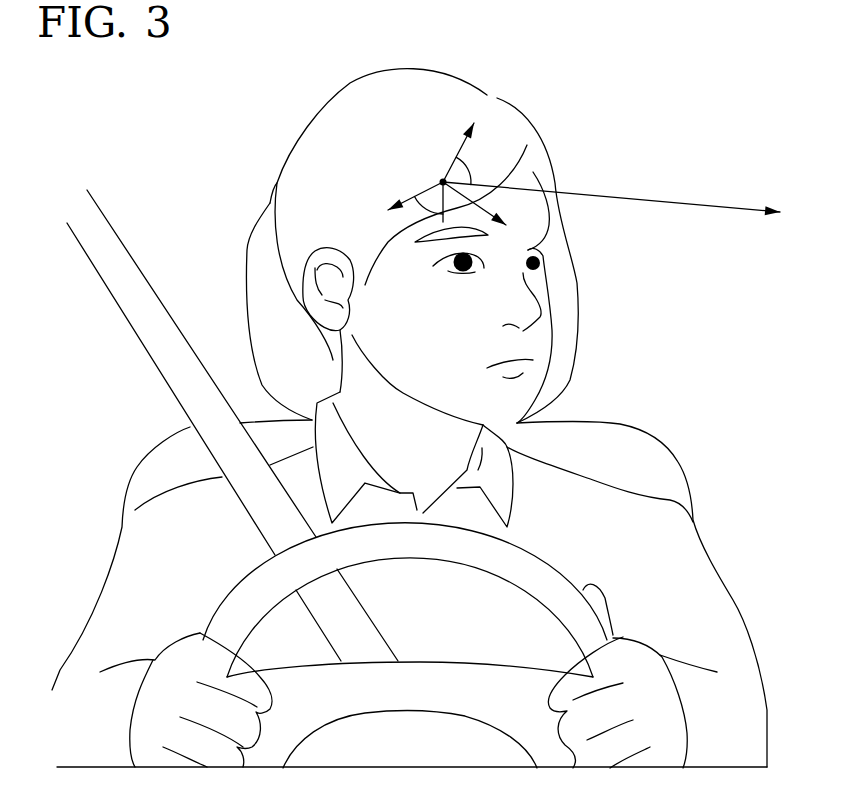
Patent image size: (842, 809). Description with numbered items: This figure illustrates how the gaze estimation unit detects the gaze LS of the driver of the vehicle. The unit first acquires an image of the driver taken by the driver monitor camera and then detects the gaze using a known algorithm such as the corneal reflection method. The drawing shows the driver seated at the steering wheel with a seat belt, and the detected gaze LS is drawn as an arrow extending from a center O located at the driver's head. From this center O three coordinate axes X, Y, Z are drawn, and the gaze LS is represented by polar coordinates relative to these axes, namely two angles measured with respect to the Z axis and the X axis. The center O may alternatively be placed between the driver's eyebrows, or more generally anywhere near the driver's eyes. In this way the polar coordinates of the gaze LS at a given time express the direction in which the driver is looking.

The gaze LS is at (658, 200).
The center O is at (434, 173).
The X axis of head coordinate system X is at (407, 201).
The Y axis of head coordinate system Y is at (482, 210).
The Z axis of head coordinate system Z is at (460, 143).